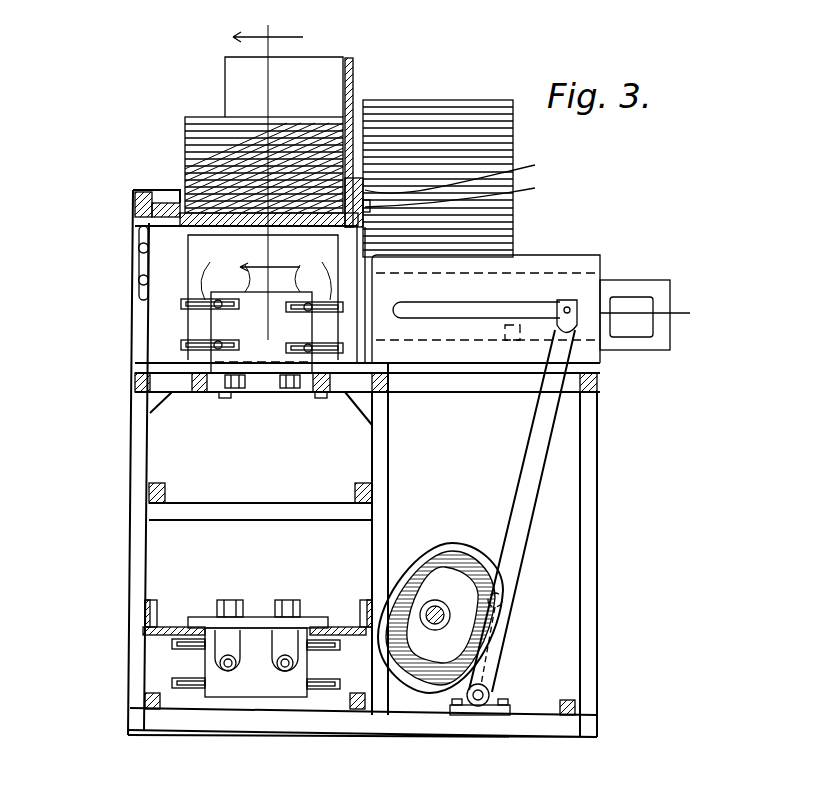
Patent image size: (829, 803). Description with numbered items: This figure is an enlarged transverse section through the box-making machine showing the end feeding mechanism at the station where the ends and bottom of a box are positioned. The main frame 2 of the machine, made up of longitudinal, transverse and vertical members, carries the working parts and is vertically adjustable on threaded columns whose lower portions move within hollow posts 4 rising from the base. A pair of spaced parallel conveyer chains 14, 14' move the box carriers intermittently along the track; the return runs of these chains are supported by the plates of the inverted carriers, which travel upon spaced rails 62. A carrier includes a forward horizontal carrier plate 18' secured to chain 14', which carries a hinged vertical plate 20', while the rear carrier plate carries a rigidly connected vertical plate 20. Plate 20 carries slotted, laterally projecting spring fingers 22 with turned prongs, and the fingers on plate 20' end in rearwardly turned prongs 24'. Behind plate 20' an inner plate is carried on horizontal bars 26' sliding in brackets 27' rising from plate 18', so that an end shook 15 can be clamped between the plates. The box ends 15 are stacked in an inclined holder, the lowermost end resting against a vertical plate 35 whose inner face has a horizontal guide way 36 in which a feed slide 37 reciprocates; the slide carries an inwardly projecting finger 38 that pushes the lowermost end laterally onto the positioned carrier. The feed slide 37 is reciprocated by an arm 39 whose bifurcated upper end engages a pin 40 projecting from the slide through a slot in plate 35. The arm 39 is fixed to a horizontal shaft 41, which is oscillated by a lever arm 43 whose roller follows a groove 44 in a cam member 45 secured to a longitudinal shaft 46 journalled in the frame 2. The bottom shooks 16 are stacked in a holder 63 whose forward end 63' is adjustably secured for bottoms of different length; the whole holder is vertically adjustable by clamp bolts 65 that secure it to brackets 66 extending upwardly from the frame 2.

The main frame 2 is at (383, 443).
The hollow post 4 is at (255, 182).
The conveyer chain 14 is at (213, 496).
The conveyer chain 14' is at (309, 496).
The end shook 15 is at (455, 137).
The bottom shook 16 is at (218, 152).
The forward horizontal carrier plate 18' is at (258, 597).
The vertical plate 20 is at (261, 332).
The vertical plate 20' is at (251, 695).
The spring fingers 22 is at (190, 300).
The prongs 24' is at (331, 664).
The horizontal bars 26' is at (269, 674).
The brackets 27' is at (197, 663).
The vertical plate 35 is at (540, 265).
The horizontal guide way 36 is at (500, 272).
The feed slide 37 is at (650, 284).
The finger 38 is at (500, 420).
The arm 39 is at (535, 470).
The pin 40 is at (657, 319).
The horizontal shaft 41 is at (487, 690).
The lever arm 43 is at (500, 625).
The groove 44 is at (465, 551).
The cam member 45 is at (440, 570).
The longitudinal shaft 46 is at (433, 630).
The rails 62 is at (172, 627).
The holder 63 is at (375, 193).
The forward end of holder 63' is at (287, 70).
The clamp bolts 65 is at (70, 312).
The brackets 66 is at (95, 352).